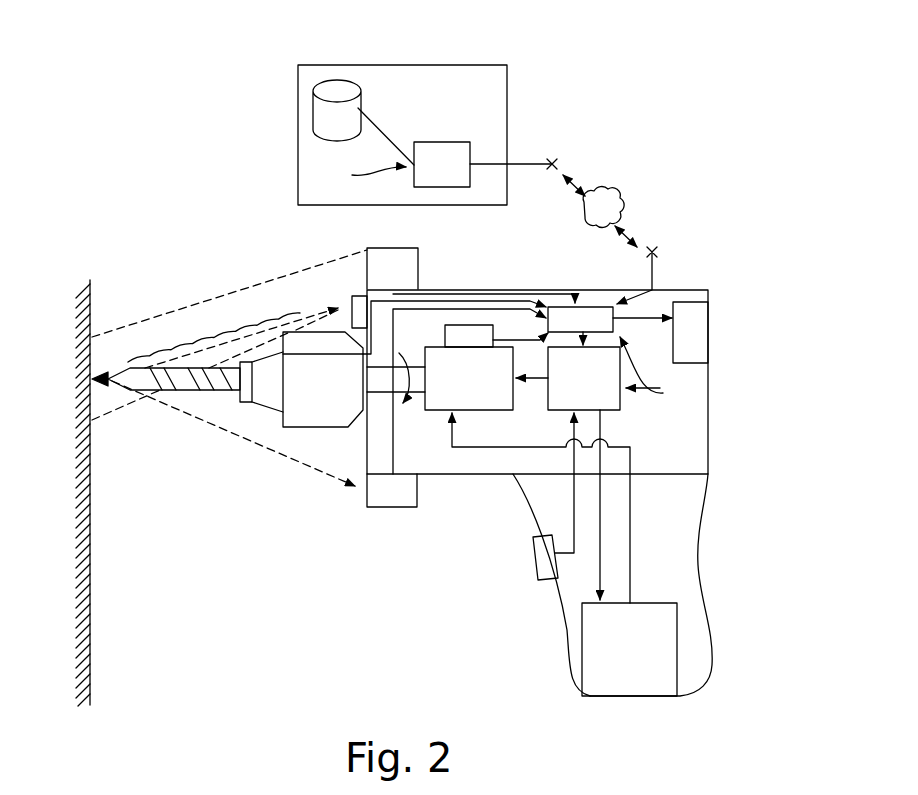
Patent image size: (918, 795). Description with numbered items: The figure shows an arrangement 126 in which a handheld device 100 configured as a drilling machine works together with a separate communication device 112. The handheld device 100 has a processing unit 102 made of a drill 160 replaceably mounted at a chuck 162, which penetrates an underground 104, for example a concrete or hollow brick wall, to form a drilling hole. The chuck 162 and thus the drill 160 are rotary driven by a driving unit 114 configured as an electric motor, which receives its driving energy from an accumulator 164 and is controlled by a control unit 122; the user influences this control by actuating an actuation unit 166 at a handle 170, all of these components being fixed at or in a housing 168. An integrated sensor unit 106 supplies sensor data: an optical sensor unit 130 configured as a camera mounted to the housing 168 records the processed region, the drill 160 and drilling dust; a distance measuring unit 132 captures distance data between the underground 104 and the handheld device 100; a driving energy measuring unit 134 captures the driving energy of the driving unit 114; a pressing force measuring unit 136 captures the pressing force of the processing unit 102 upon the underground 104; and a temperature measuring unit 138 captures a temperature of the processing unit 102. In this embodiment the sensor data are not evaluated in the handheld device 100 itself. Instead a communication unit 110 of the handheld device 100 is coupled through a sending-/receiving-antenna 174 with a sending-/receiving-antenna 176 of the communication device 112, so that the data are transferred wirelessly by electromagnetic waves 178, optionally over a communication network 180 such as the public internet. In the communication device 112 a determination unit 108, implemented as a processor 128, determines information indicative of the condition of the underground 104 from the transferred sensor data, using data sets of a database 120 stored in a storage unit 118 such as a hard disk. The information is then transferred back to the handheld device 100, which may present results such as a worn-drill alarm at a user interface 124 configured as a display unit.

The handheld device 100 is at (528, 434).
The processing unit 102 is at (196, 385).
The underground 104 is at (93, 608).
The sensor unit 106 is at (408, 404).
The determination unit 108 is at (414, 147).
The communication unit 110 is at (610, 325).
The communication device 112 is at (458, 121).
The driving unit 114 is at (440, 378).
The storage unit 118 is at (361, 104).
The database 120 is at (375, 104).
The control unit 122 is at (568, 378).
The user interface 124 is at (693, 338).
The arrangement 126 is at (150, 138).
The processor 128 is at (506, 287).
The optical sensor unit 130 is at (418, 255).
The distance measuring unit 132 is at (390, 497).
The driving energy measuring unit 134 is at (455, 323).
The pressing force measuring unit 136 is at (248, 368).
The temperature measuring unit 138 is at (353, 300).
The drill 160 is at (163, 372).
The chuck 162 is at (268, 405).
The accumulator 164 is at (590, 643).
The actuation unit 166 is at (533, 555).
The housing 168 is at (520, 483).
The handle 170 is at (574, 585).
The sending-/receiving-antenna 174 is at (655, 250).
The sending-/receiving-antenna 176 is at (556, 158).
The electromagnetic waves 178 is at (575, 186).
The communication network 180 is at (617, 184).